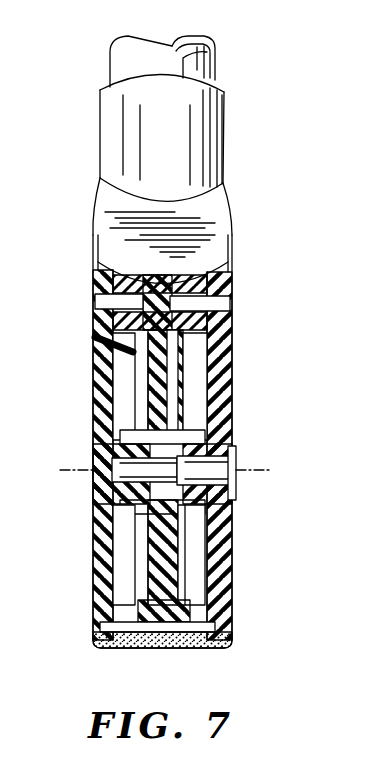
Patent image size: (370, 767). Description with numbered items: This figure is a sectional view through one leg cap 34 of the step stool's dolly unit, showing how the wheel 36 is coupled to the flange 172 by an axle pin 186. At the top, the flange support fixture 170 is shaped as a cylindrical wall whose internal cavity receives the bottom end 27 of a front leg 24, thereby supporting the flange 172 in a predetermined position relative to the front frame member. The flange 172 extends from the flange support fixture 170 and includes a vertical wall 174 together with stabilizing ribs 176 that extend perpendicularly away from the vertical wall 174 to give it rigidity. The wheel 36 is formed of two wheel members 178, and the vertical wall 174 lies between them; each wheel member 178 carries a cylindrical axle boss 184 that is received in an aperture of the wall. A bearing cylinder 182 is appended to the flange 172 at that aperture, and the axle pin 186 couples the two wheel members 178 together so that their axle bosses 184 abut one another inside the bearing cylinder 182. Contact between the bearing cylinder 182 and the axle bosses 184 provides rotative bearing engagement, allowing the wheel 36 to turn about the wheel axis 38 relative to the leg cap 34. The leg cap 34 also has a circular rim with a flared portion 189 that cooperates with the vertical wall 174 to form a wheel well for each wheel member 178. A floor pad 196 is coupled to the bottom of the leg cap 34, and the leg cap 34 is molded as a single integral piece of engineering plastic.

The front leg 24 is at (98, 70).
The bottom end 27 is at (207, 72).
The flange support fixture 170 is at (192, 127).
The leg cap 34 is at (236, 203).
The flange 172 is at (88, 300).
The stabilizing ribs 176 is at (218, 282).
The vertical wall 174 is at (162, 303).
The flared portion 189 is at (217, 328).
The wheel 36 is at (240, 380).
The wheel members 178 is at (99, 386).
The bearing cylinder 182 is at (132, 433).
The cylindrical axle boss 184 is at (116, 458).
The axle pin 186 is at (218, 467).
The wheel axis 38 is at (257, 477).
The floor pad 196 is at (82, 633).